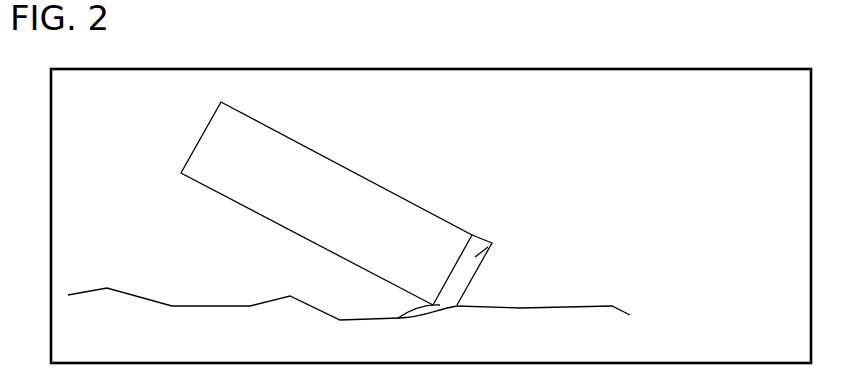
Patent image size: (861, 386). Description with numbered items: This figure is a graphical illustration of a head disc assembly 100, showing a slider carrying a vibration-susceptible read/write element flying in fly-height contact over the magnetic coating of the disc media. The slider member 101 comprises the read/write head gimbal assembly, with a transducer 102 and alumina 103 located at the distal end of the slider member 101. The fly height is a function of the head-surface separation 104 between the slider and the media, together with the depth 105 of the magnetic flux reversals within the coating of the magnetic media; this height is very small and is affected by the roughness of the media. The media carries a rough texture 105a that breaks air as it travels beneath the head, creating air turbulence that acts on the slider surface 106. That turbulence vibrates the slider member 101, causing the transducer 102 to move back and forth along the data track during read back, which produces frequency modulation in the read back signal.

The head disc assembly 100 is at (587, 70).
The slider member 101 is at (360, 200).
The transducer 102 is at (400, 317).
The alumina 103 is at (493, 242).
The head-surface separation 104 is at (458, 305).
The depth 105 is at (590, 330).
The rough texture 105a is at (257, 304).
The slider surface 106 is at (277, 225).